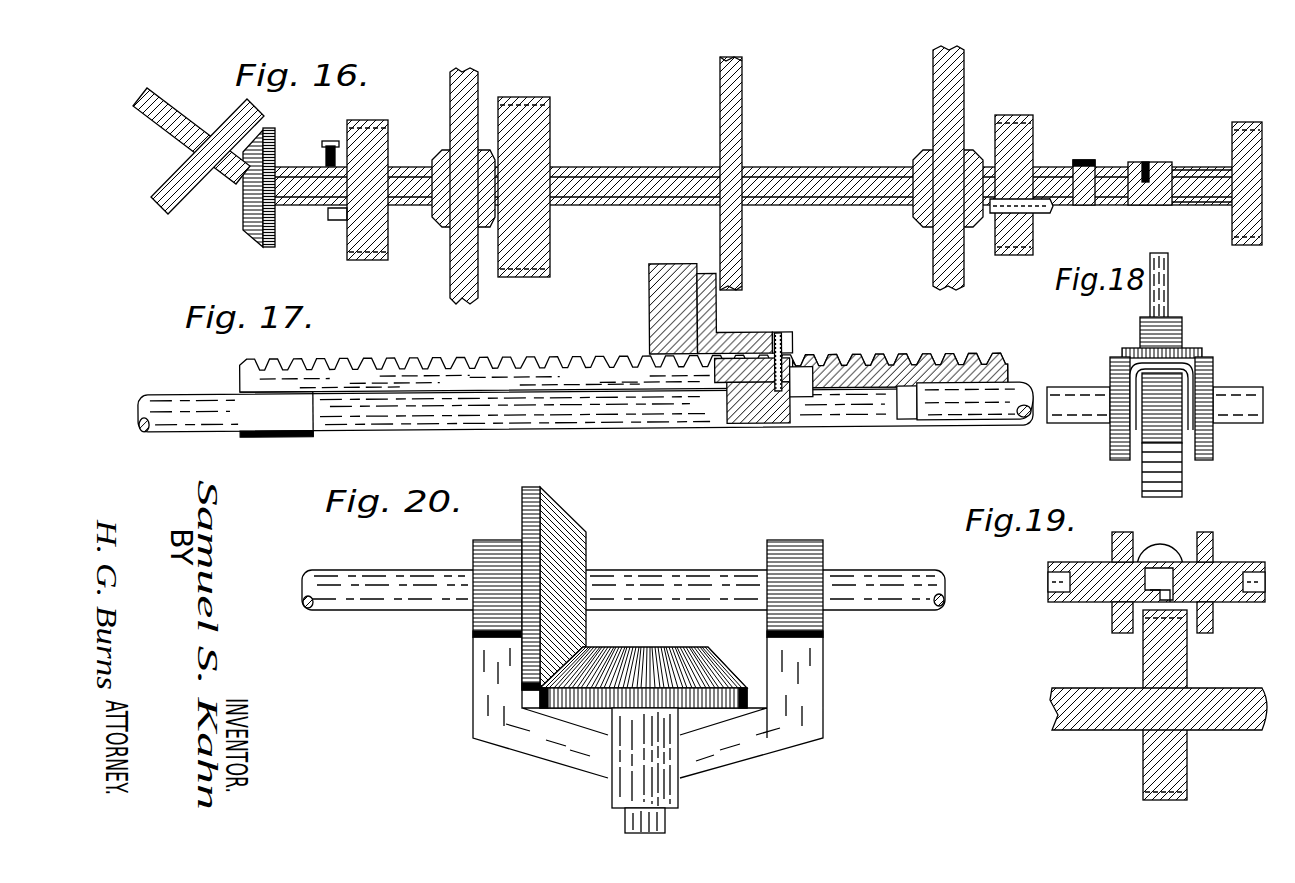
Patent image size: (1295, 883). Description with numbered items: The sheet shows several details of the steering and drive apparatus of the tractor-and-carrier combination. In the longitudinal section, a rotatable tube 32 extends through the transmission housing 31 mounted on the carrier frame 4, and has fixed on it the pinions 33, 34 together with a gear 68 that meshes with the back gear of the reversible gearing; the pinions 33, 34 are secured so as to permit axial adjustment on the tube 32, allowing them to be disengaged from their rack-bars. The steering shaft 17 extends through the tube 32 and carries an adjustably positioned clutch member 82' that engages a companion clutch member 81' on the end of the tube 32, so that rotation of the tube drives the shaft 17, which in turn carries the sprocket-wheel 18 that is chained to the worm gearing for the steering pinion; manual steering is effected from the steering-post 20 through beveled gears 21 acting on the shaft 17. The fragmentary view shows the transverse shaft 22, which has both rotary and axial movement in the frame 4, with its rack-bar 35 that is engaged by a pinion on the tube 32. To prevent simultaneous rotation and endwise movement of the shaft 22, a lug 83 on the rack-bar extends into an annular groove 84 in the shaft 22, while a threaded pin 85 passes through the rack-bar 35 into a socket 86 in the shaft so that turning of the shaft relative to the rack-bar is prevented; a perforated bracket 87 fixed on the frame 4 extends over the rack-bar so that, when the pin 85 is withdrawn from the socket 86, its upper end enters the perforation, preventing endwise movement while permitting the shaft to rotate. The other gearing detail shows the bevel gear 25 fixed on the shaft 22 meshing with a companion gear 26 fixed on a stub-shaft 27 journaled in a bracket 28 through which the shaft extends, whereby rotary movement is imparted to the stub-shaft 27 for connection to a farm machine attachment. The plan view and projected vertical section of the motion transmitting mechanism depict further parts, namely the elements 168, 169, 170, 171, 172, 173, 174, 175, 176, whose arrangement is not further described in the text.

In FIG. 17, the frame 4 is at (650, 305).
In FIG. 16, the shaft 17 is at (1206, 192).
In FIG. 16, the sprocket-wheel 18 is at (1232, 138).
In FIG. 16, the steering-post 20 is at (176, 132).
In FIG. 16, the beveled gears 21 is at (244, 203).
In FIG. 17, the transverse shaft 22 is at (835, 428).
In FIG. 20, the transverse shaft 22 is at (720, 570).
In FIG. 20, the bevel gear 25 is at (584, 532).
In FIG. 20, the companion gear 26 is at (650, 653).
In FIG. 20, the stub-shaft 27 is at (669, 820).
In FIG. 20, the bracket 28 is at (812, 697).
In FIG. 16, the housing 31 is at (470, 74).
In FIG. 16, the tube 32 is at (846, 167).
In FIG. 16, the pinion 33 is at (1013, 114).
In FIG. 16, the pinion 34 is at (373, 112).
In FIG. 17, the rack-bar 35 is at (885, 360).
In FIG. 16, the gear 68 is at (549, 240).
In FIG. 16, the clutch member 81' is at (1100, 158).
In FIG. 16, the clutch member 82' is at (1152, 159).
In FIG. 17, the lug 83 is at (908, 418).
In FIG. 17, the annular groove 84 is at (902, 428).
In FIG. 17, the pin 85 is at (778, 337).
In FIG. 17, the socket 86 is at (778, 400).
In FIG. 17, the perforated bracket 87 is at (718, 320).
In FIG. 18, the worm wheel 168 is at (1130, 348).
In FIG. 19, the worm wheel 168 is at (1172, 546).
In FIG. 18, the vertical shaft 169 is at (1168, 285).
In FIG. 18, the ring 170 is at (1213, 442).
In FIG. 19, the ring 170 is at (1213, 624).
In FIG. 18, the ring 171 is at (1112, 446).
In FIG. 19, the ring 171 is at (1114, 624).
In FIG. 18, the hub 172 is at (1168, 432).
In FIG. 19, the hub 172 is at (1159, 563).
In FIG. 19, the slot 173 is at (1152, 602).
In FIG. 19, the bar 174 is at (1058, 583).
In FIG. 18, the column 175 is at (1142, 484).
In FIG. 19, the column 175 is at (1187, 755).
In FIG. 19, the bar 176 is at (1080, 728).